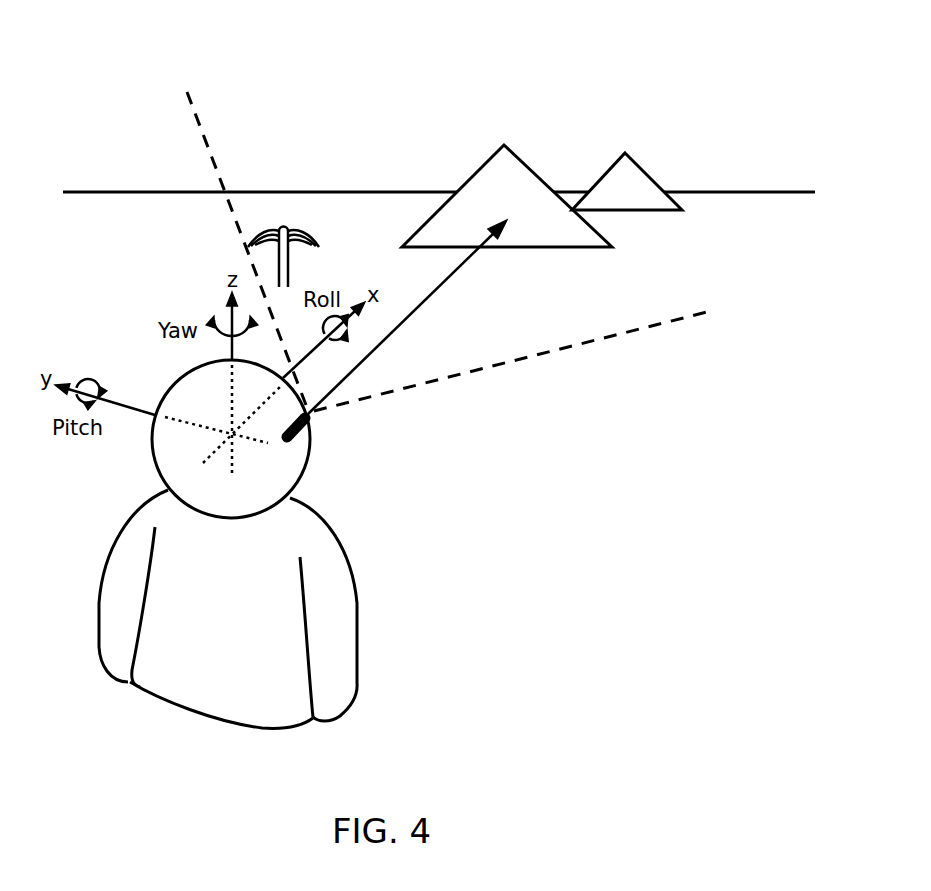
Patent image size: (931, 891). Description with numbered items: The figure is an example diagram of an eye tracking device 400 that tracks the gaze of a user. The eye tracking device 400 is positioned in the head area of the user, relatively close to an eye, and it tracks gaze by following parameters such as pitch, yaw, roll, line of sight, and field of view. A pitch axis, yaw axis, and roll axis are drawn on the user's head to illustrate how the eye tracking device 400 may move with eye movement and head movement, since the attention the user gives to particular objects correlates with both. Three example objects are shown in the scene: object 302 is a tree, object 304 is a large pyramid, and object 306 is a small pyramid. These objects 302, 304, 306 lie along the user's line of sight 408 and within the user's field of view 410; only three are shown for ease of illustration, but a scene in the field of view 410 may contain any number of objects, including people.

The object (tree) 302 is at (296, 224).
The object (large pyramid) 304 is at (533, 162).
The object (small pyramid) 306 is at (655, 173).
The eye tracking device 400 is at (310, 420).
The line of sight 408 is at (440, 288).
The field of view 410 is at (187, 92).